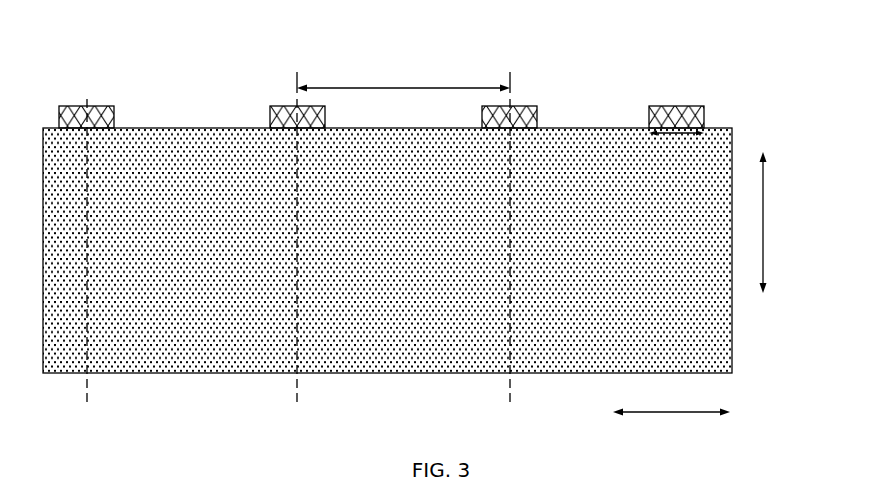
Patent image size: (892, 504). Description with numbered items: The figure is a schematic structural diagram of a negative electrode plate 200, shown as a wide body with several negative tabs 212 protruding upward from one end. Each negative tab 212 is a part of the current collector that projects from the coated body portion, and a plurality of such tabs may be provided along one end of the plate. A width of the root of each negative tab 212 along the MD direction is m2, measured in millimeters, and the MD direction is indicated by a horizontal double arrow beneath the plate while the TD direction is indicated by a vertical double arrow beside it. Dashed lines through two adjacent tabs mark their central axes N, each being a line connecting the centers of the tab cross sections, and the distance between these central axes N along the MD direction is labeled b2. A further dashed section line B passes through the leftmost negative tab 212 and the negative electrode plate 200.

The negative electrode plate 200 is at (338, 28).
The negative tab 212 is at (516, 106).
The section line B- B is at (110, 408).
The central axis of the negative tab N is at (403, 266).
The distance between central axes of two adjacent negative tabs b2 is at (403, 78).
The width of the root of the negative tab m2 is at (676, 145).
The TD direction TD is at (780, 222).
The MD direction MD is at (671, 399).